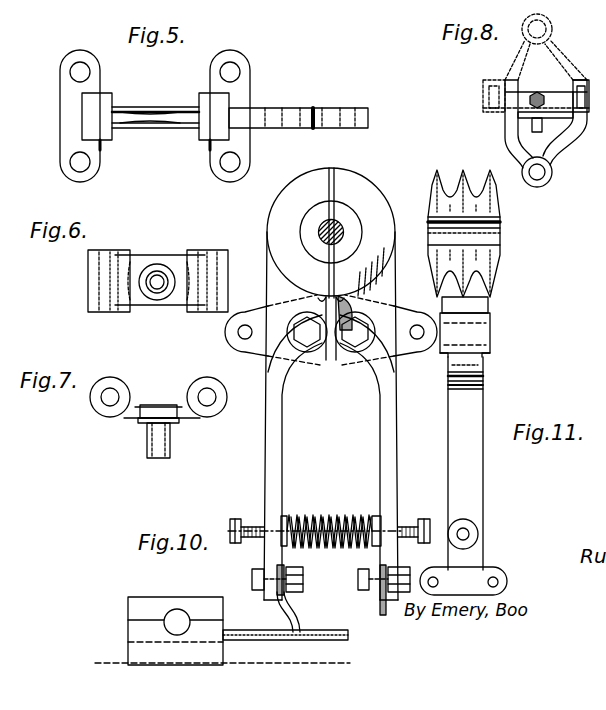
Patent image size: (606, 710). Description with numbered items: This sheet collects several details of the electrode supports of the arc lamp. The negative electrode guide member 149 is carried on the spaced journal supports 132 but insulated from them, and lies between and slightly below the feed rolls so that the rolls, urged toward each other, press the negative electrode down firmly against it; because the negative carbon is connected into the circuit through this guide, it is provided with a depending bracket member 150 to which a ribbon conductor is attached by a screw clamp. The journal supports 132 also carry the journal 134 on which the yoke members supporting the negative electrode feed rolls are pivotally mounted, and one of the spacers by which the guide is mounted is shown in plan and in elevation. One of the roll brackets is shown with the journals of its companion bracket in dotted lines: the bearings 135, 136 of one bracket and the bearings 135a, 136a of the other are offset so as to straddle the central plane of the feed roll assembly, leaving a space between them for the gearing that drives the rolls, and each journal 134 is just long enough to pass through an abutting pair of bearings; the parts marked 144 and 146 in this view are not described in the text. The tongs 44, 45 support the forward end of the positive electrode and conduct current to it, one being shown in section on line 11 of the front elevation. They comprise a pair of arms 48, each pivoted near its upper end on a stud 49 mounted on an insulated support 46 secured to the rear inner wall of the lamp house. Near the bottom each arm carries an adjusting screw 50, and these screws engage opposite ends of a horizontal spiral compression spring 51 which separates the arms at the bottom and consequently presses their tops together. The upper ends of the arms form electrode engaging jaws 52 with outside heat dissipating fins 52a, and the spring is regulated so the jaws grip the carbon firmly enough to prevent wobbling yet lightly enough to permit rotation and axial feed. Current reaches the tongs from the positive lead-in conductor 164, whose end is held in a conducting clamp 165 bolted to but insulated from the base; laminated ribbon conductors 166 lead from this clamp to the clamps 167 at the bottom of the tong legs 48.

In FIG. 5, the negative electrode guide member 149 is at (166, 110).
In FIG. 5, the depending bracket member 150 is at (295, 110).
In FIG. 6, the journal support 132 is at (142, 262).
In FIG. 7, the journal support 132 is at (134, 408).
In FIG. 6, the journal 134 is at (157, 289).
In FIG. 7, the journal 134 is at (163, 447).
In FIG. 11, the electrode engaging jaws 52 is at (319, 226).
In FIG. 11, the heat dissipating fins 52a is at (296, 182).
In FIG. 11, the section line 11- 11 is at (342, 160).
In FIG. 11, the insulated support 46 is at (252, 348).
In FIG. 11, the stud 49 is at (312, 337).
In FIG. 11, the tong 45 is at (286, 366).
In FIG. 11, the tong 44 is at (378, 370).
In FIG. 11, the arms 48 is at (263, 499).
In FIG. 11, the horizontal spiral compression spring 51 is at (361, 519).
In FIG. 11, the adjusting screw 50 is at (240, 544).
In FIG. 11, the clamps 167 is at (252, 578).
In FIG. 10, the laminated ribbon conductors 166 is at (246, 630).
In FIG. 10, the positive lead-in conductor 164 is at (178, 616).
In FIG. 10, the conducting clamp 165 is at (130, 628).
In FIG. 8, the eye 144 is at (552, 22).
In FIG. 8, the bearing 135 is at (516, 82).
In FIG. 8, the bearing 135a is at (558, 82).
In FIG. 8, the bearing 136 is at (584, 83).
In FIG. 8, the bearing 136a is at (493, 116).
In FIG. 8, the pin 146 is at (540, 123).